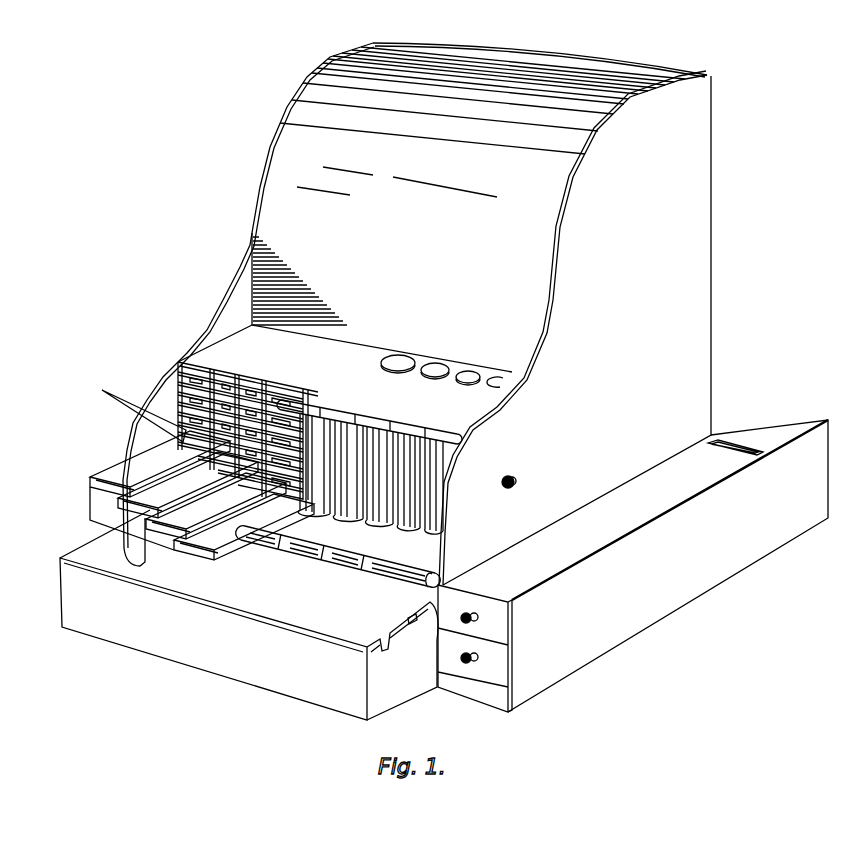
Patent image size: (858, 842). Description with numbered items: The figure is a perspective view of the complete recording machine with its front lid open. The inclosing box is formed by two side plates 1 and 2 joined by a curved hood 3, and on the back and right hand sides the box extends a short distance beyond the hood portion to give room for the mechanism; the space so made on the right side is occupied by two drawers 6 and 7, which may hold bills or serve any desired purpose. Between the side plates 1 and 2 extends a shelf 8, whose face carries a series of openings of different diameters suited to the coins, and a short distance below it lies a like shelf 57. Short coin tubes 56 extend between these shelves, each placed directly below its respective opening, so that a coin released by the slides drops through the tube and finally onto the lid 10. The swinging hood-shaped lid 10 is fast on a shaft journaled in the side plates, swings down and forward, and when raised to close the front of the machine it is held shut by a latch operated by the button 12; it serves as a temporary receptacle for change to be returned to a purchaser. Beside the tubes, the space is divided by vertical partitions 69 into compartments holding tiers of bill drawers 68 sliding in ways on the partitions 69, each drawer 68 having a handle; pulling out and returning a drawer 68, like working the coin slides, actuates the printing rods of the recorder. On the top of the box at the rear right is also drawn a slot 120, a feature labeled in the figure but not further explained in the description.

The side plate 1 is at (575, 328).
The side plate 2 is at (248, 304).
The hood 3 is at (493, 159).
The shelf 8 is at (345, 358).
The dividing partitions 69 is at (264, 380).
The coin tubes 56 is at (412, 425).
The shelf 57 is at (338, 557).
The drawers 68 is at (96, 466).
The swinging hood-shaped lid 10 is at (249, 615).
The drawer 6 is at (464, 609).
The drawer 7 is at (462, 652).
The button 12 is at (520, 484).
The slot 120 is at (732, 455).